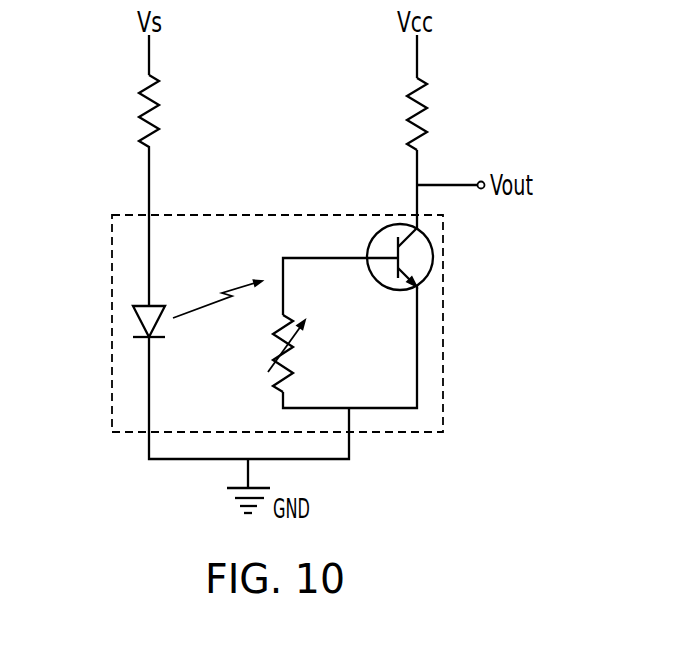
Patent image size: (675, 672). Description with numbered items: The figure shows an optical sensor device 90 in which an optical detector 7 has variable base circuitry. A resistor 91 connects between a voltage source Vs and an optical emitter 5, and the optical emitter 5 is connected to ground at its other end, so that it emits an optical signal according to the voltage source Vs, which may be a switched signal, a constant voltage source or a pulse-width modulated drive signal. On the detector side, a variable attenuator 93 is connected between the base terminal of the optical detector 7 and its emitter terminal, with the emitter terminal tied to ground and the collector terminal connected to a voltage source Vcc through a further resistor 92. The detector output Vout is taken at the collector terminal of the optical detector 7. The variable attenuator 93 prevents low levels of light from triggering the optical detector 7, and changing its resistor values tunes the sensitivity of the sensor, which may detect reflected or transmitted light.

The resistor 91 is at (141, 97).
The resistor 92 is at (430, 107).
The optical sensor device 90 is at (112, 255).
The optical emitter 5 is at (160, 329).
The variable attenuator 93 is at (296, 370).
The optical detector 7 is at (433, 252).